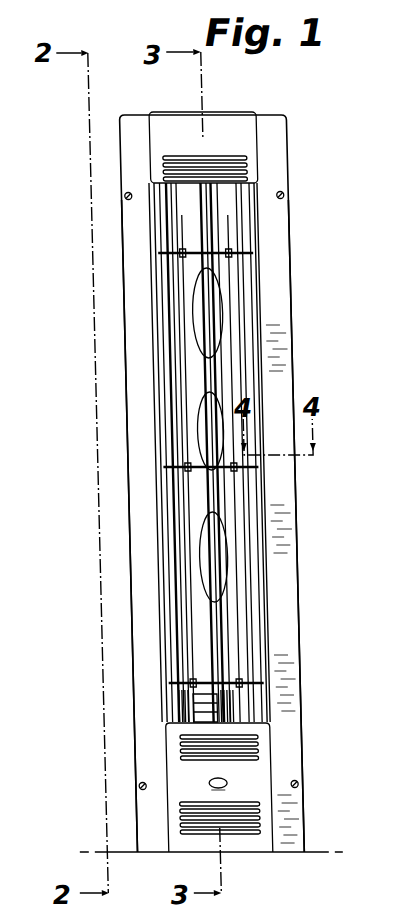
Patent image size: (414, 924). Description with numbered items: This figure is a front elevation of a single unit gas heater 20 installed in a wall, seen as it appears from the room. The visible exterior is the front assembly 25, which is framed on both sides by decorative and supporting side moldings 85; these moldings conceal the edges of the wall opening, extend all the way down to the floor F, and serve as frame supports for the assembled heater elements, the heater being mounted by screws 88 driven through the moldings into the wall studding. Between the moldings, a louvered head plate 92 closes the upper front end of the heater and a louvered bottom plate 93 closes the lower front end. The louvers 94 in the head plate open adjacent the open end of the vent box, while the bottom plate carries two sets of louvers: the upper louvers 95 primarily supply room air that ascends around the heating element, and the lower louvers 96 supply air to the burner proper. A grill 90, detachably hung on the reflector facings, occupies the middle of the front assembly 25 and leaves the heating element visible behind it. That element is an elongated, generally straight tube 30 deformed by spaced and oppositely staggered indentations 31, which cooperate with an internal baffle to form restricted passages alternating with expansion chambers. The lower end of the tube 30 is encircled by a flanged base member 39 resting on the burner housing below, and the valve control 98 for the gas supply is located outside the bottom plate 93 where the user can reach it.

The heater 20 is at (294, 264).
The front assembly 25 is at (276, 506).
The tube 30 is at (211, 373).
The indentations 31 is at (202, 315).
The flanged base member 39 is at (176, 703).
The side moldings 85 is at (122, 308).
The screws 88 is at (120, 197).
The grill 90 is at (225, 615).
The louvered head plate 92 is at (248, 167).
The louvered bottom plate 93 is at (246, 778).
The louvers 94 is at (211, 157).
The upper louvers 95 is at (162, 750).
The louvers 96 is at (160, 820).
The valve control 98 is at (190, 783).
The floor F is at (292, 852).